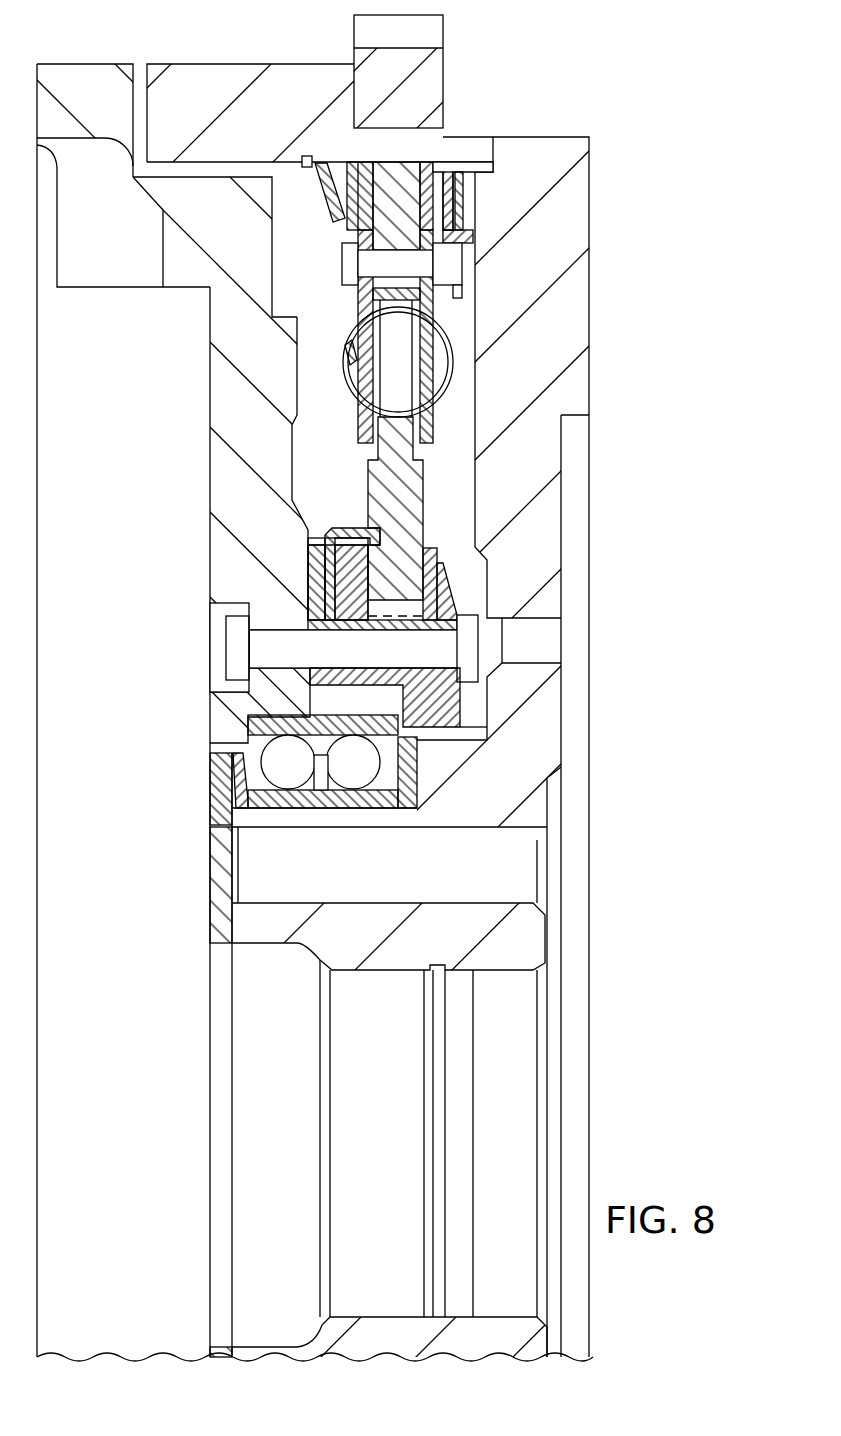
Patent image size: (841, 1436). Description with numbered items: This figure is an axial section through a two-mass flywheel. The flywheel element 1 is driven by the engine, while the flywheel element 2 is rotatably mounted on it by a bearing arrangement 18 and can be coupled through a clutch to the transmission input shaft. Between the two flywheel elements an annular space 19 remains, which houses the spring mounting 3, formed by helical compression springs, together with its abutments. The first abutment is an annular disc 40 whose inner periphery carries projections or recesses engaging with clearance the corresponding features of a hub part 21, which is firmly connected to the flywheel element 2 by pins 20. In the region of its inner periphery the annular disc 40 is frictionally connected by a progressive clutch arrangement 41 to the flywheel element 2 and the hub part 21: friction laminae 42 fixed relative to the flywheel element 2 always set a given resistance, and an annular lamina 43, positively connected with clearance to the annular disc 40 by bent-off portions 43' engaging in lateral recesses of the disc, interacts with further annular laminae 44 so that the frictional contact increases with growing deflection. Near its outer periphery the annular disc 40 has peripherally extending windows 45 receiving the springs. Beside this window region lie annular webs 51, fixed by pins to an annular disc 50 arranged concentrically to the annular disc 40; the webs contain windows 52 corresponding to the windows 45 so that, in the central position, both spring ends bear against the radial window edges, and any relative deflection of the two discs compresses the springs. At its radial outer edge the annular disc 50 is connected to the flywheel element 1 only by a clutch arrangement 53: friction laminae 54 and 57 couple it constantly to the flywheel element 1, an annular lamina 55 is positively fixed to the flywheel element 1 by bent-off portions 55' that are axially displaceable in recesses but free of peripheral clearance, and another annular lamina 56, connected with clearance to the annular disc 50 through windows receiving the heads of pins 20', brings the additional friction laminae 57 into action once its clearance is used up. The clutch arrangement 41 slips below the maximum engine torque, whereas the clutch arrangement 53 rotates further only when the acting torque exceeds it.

The flywheel element 1 is at (552, 590).
The flywheel element 2 is at (232, 486).
The spring mounting 3 is at (426, 364).
The bearing arrangement 18 is at (318, 782).
The annular space 19 is at (307, 220).
The pins 20 is at (321, 647).
The pins 20' is at (390, 283).
The hub part 21 is at (445, 706).
The annular disc 40 is at (418, 487).
The clutch arrangement 41 is at (298, 582).
The friction laminae 42 is at (430, 556).
The annular lamina 43 is at (251, 567).
The bent-off portions 43' is at (351, 550).
The annular laminae 44 is at (330, 630).
The windows 45 is at (403, 346).
The annular disc 50 is at (397, 168).
The annular webs 51 is at (360, 438).
The windows 52 is at (360, 372).
The clutch arrangement 53 is at (338, 232).
The friction laminae 54 is at (353, 166).
The annular lamina 55 is at (488, 201).
The bent-off portions 55' is at (487, 169).
The annular lamina 56 is at (466, 212).
The friction laminae 57 is at (428, 166).